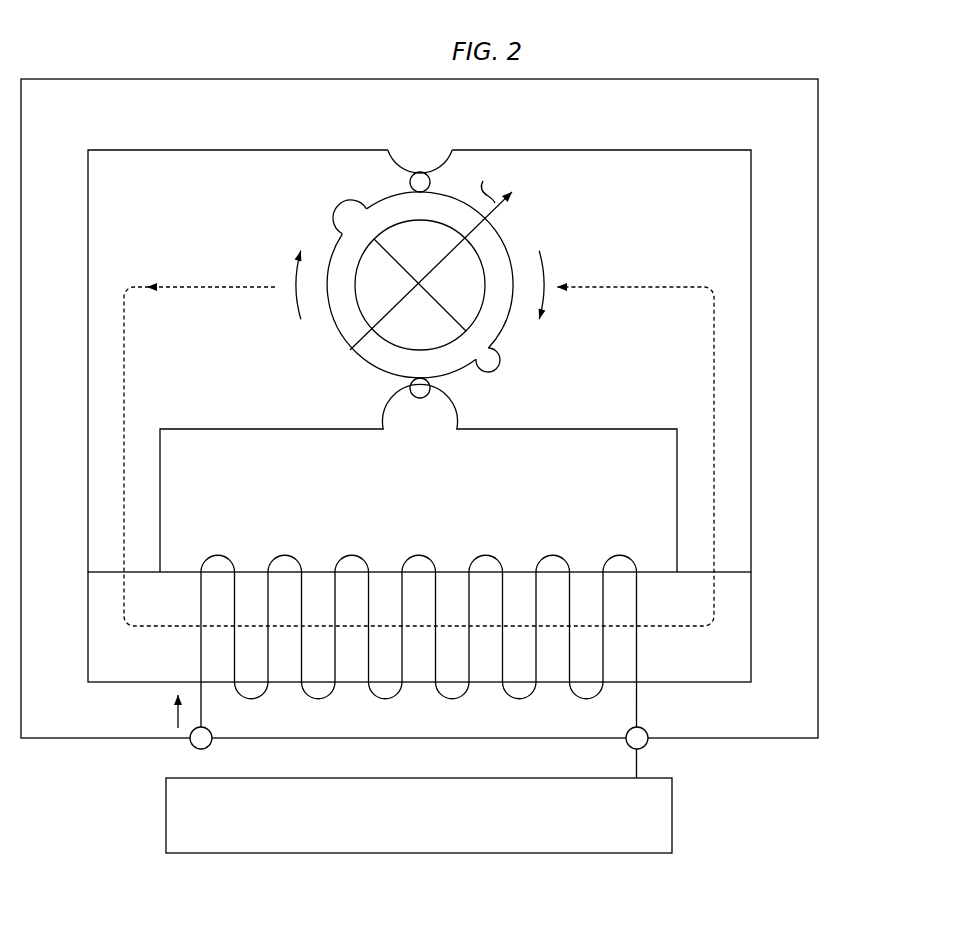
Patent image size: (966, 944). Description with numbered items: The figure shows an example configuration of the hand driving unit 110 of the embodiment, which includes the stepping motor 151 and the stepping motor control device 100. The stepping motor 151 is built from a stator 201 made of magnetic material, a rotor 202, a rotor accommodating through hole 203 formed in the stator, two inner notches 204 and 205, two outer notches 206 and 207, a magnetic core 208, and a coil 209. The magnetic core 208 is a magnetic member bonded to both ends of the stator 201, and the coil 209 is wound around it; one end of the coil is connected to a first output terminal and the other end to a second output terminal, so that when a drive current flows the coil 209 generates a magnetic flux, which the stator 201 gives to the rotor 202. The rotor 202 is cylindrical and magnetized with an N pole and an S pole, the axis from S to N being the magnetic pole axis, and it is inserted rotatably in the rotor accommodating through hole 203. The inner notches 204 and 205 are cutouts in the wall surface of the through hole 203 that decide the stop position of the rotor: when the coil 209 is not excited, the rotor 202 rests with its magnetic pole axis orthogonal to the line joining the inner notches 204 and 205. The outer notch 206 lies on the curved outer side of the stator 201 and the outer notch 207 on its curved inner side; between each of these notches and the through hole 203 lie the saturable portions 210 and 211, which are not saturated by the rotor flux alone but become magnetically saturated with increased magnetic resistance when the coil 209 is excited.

The stepping motor control device 100 is at (673, 817).
The hand driving unit 110 is at (890, 122).
The stepping motor 151 is at (820, 225).
The stator 201 is at (751, 192).
The rotor 202 is at (477, 250).
The rotor accommodating through hole 203 is at (495, 320).
The inner notch 204 is at (485, 360).
The inner notch 205 is at (337, 208).
The outer notch 206 is at (432, 165).
The outer notch 207 is at (437, 402).
The magnetic core 208 is at (752, 633).
The coil 209 is at (638, 648).
The saturable portion 210 is at (410, 182).
The saturable portion 211 is at (408, 387).